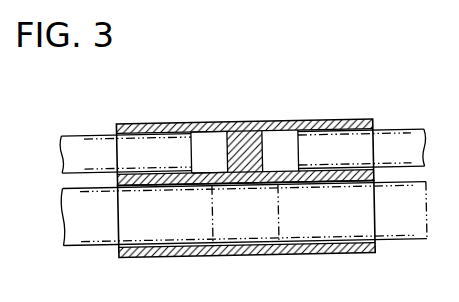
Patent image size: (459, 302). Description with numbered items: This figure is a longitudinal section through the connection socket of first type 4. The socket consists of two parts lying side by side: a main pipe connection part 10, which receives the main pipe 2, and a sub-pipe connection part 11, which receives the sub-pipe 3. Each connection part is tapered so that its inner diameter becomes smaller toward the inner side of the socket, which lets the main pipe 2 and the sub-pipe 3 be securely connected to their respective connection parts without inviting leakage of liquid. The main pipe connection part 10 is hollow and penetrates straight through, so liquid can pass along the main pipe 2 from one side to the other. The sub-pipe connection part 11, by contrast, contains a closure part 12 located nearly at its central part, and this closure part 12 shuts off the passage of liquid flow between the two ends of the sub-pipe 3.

The main pipe 2 is at (84, 220).
The sub-pipe 3 is at (85, 143).
The connection socket of first type 4 is at (285, 103).
The main pipe connection part 10 is at (240, 219).
The sub-pipe connection part 11 is at (197, 153).
The closure part 12 is at (243, 150).